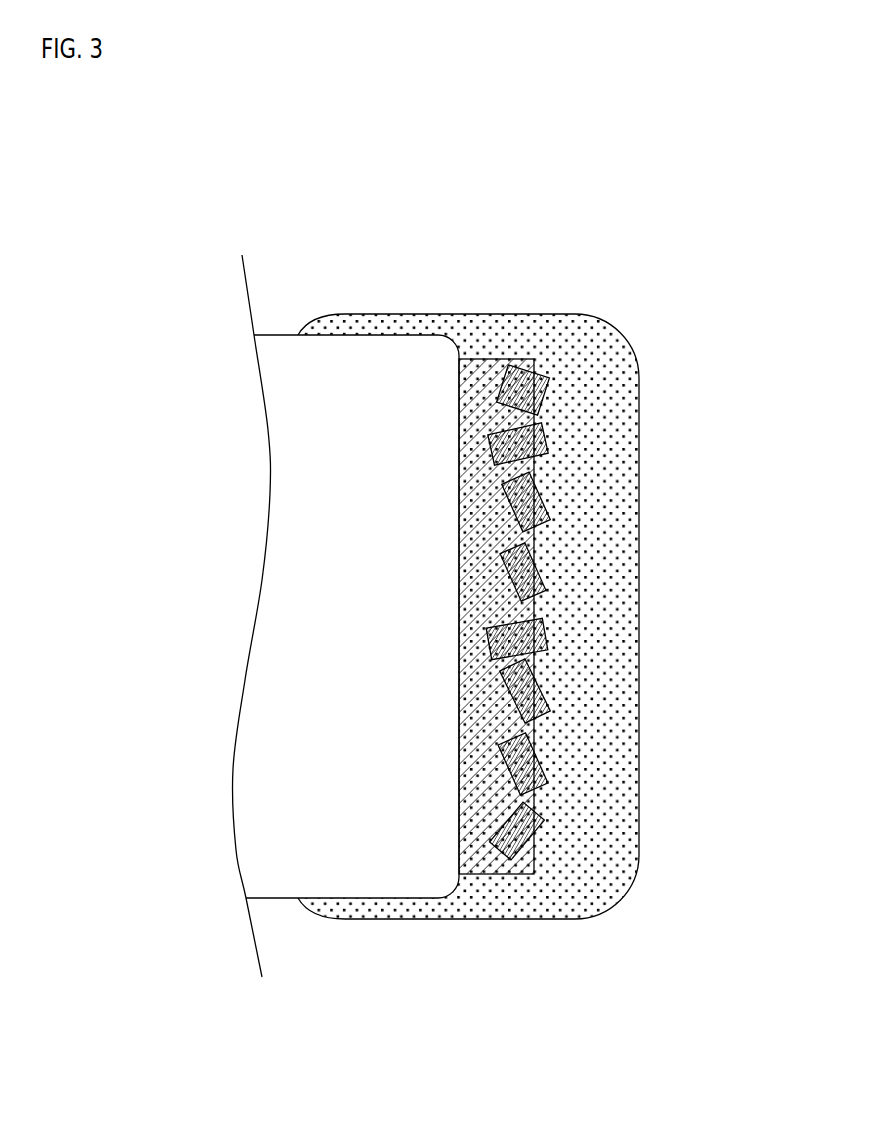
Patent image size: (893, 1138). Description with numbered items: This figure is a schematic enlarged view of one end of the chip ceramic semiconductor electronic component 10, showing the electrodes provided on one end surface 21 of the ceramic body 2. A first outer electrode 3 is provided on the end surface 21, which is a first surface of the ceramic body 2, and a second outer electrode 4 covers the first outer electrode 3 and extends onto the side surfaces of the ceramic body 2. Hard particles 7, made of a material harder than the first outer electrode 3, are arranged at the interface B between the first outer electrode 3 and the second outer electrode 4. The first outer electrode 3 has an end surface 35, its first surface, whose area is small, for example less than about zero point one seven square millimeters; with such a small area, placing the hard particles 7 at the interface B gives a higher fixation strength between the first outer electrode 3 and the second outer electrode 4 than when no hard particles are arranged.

The chip ceramic semiconductor electronic component 10 is at (470, 238).
The ceramic body 2 is at (346, 646).
The end surface 21 is at (455, 786).
The first outer electrode 3 is at (479, 845).
The second outer electrode 4 is at (593, 488).
The hard particle 7 is at (619, 612).
The interface B is at (535, 537).
The end surface of first outer electrode 35 is at (535, 723).